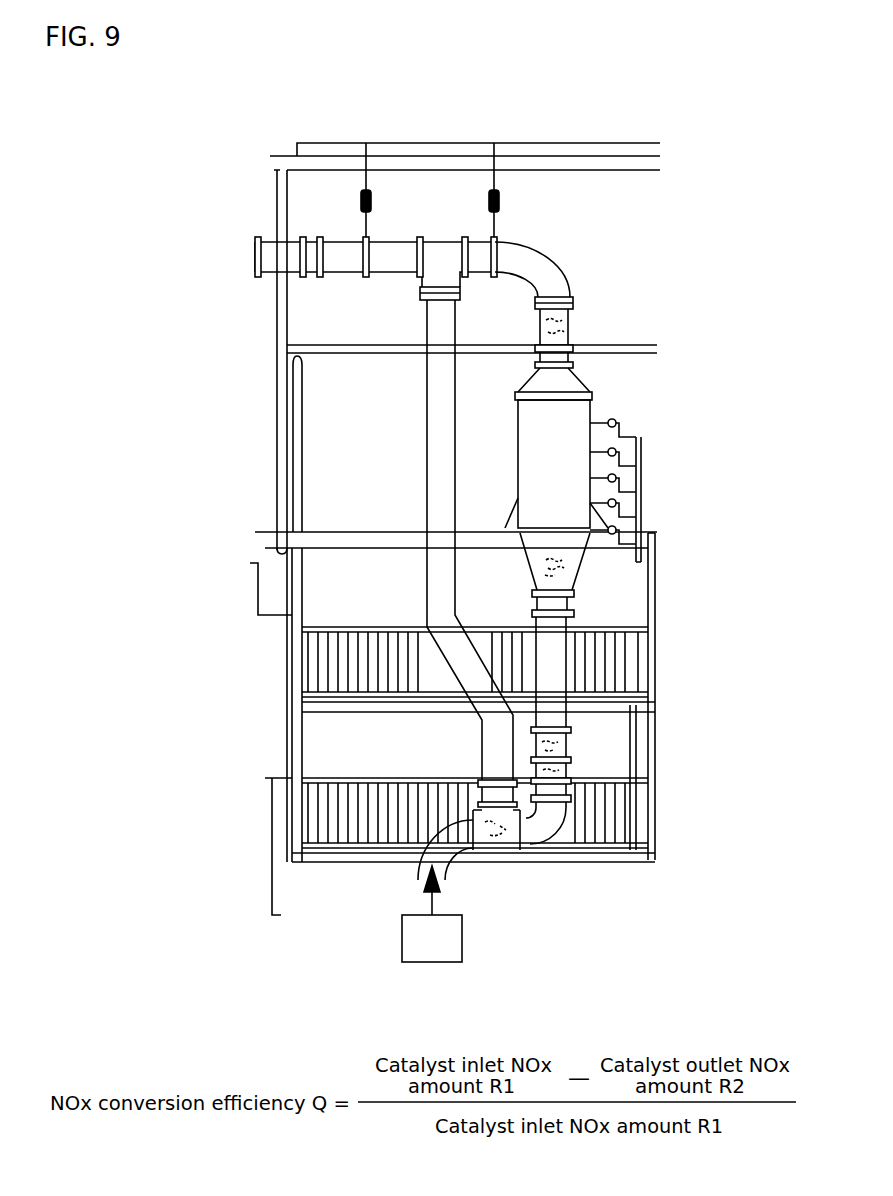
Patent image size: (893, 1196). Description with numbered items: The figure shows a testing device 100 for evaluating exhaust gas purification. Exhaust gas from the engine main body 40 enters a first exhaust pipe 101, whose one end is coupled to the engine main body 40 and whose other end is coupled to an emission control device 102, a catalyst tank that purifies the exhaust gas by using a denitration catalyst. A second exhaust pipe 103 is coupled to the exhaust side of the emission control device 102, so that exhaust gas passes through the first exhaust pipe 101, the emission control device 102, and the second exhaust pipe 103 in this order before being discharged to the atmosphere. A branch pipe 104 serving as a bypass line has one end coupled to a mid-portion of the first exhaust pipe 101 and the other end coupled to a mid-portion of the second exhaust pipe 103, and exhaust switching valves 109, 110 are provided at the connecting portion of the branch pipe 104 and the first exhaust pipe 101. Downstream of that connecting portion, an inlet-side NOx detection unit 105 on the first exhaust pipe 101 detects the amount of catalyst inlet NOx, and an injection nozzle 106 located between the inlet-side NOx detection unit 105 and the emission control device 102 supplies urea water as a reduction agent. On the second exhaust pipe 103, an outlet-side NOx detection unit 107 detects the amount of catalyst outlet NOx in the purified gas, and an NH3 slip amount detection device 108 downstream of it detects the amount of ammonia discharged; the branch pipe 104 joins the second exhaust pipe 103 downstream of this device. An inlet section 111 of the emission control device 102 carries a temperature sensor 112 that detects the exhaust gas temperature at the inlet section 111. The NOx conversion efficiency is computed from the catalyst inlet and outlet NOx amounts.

The testing device 100 is at (176, 112).
The first exhaust pipe 101 is at (540, 835).
The emission control device (catalyst tank) 102 is at (573, 418).
The second exhaust pipe 103 is at (541, 266).
The branch pipe (bypass line) 104 is at (437, 465).
The inlet-side NOx detection unit 105 is at (568, 768).
The injection nozzle 106 is at (568, 745).
The outlet-side NOx detection unit 107 is at (545, 362).
The NH3 slip amount detection device 108 is at (545, 328).
The exhaust switching valve 109 is at (478, 852).
The exhaust switching valve 110 is at (510, 862).
The inlet section 111 is at (556, 577).
The temperature sensor 112 is at (553, 578).
The engine main body 40 is at (410, 950).